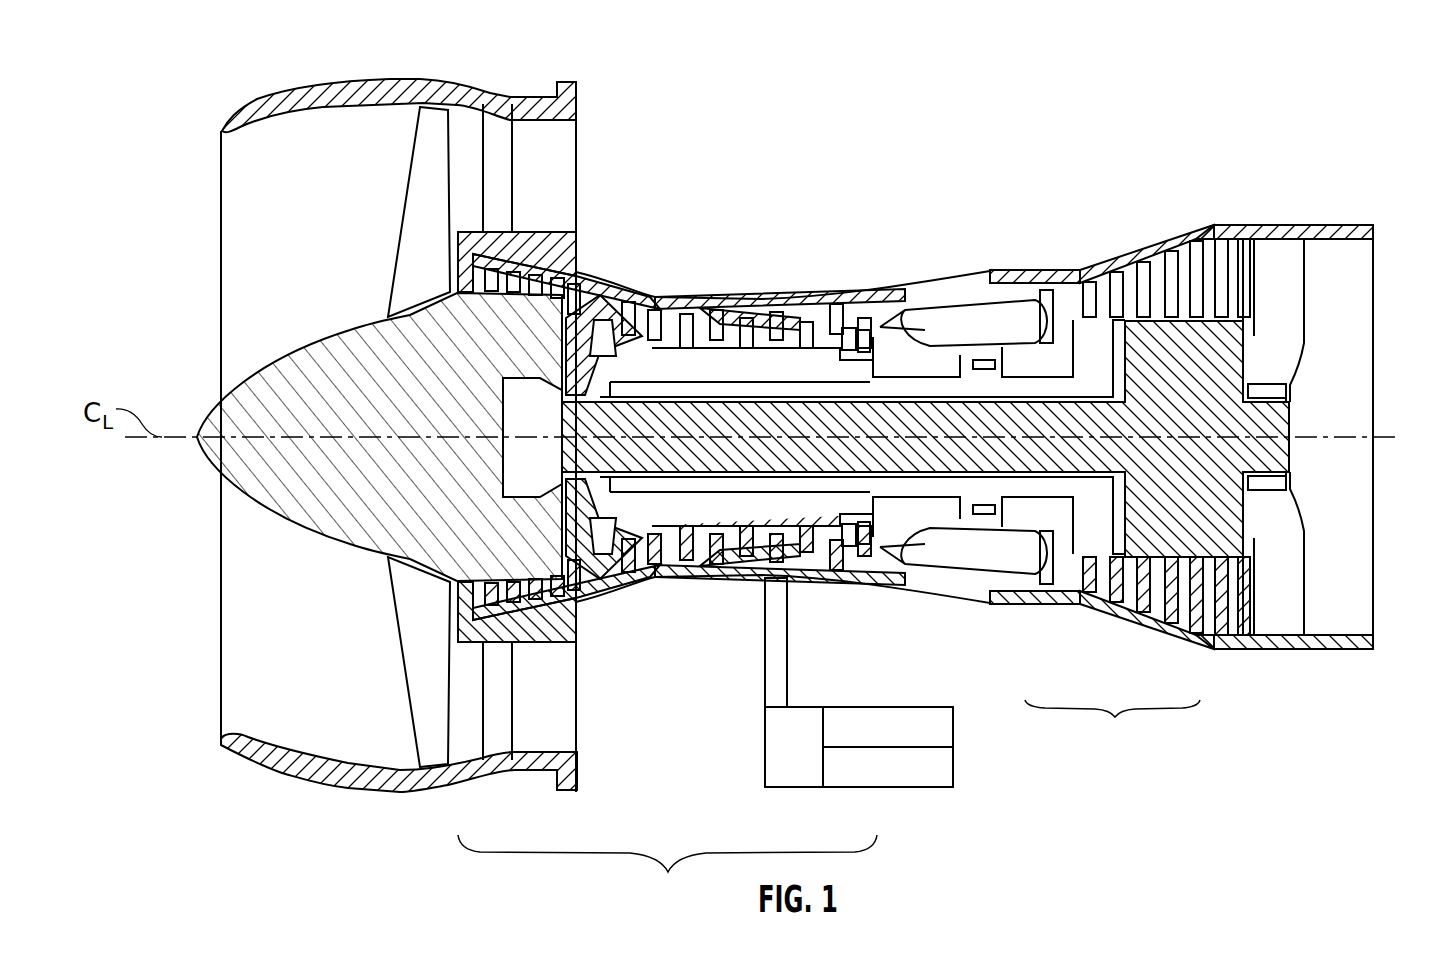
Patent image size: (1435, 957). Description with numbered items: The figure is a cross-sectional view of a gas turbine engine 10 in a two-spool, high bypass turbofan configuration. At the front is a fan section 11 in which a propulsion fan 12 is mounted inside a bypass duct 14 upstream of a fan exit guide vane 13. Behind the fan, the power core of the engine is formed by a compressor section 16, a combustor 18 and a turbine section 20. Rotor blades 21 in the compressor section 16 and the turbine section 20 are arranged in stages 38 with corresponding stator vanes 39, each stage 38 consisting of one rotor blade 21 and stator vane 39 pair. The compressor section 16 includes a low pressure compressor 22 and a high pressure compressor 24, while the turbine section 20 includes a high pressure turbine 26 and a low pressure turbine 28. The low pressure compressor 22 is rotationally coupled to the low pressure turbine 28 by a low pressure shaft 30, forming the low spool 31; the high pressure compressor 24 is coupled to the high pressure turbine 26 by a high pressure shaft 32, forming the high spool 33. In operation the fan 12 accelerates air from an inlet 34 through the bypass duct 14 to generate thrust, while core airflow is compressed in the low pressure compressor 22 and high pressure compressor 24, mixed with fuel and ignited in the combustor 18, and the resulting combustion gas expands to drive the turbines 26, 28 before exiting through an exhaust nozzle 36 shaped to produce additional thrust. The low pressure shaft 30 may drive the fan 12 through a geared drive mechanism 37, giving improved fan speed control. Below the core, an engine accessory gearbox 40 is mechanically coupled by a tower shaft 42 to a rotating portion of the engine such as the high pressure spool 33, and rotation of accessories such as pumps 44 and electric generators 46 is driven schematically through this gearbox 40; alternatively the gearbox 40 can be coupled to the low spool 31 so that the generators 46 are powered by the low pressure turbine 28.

The gas turbine engine 10 is at (230, 82).
The fan section 11 is at (350, 46).
The propulsion fan 12 is at (400, 252).
The fan exit guide vane 13 is at (500, 158).
The bypass duct 14 is at (562, 203).
The compressor section 16 is at (667, 871).
The combustor 18 is at (963, 325).
The turbine section 20 is at (1112, 726).
The rotor blade 21 is at (880, 328).
The low pressure compressor 22 is at (567, 602).
The high pressure compressor 24 is at (705, 578).
The high pressure turbine 26 is at (1088, 600).
The low pressure turbine 28 is at (1183, 632).
The low pressure shaft 30 is at (1023, 460).
The low pressure spool 31 is at (1229, 346).
The high pressure shaft 32 is at (933, 492).
The high pressure spool 33 is at (732, 362).
The inlet 34 is at (240, 240).
The exhaust nozzle 36 is at (1350, 383).
The geared drive mechanism 37 is at (518, 458).
The stage 38 is at (466, 598).
The stator vane 39 is at (848, 325).
The engine accessory gearbox 40 is at (793, 787).
The tower shaft 42 is at (762, 668).
The pumps 44 is at (902, 707).
The electric generators 46 is at (902, 787).